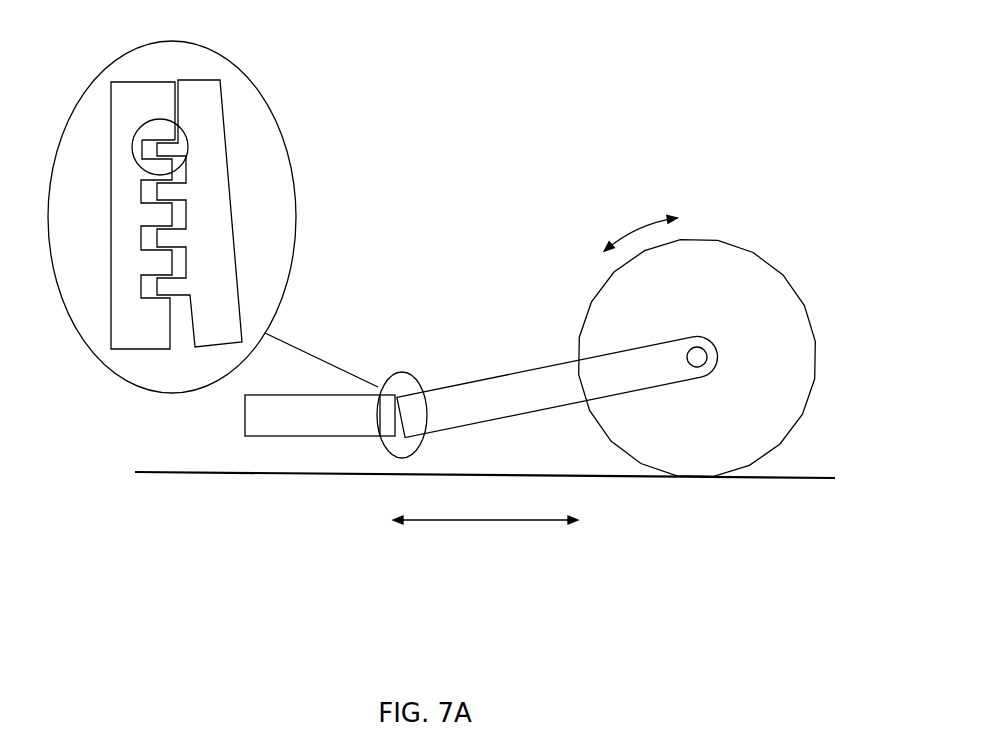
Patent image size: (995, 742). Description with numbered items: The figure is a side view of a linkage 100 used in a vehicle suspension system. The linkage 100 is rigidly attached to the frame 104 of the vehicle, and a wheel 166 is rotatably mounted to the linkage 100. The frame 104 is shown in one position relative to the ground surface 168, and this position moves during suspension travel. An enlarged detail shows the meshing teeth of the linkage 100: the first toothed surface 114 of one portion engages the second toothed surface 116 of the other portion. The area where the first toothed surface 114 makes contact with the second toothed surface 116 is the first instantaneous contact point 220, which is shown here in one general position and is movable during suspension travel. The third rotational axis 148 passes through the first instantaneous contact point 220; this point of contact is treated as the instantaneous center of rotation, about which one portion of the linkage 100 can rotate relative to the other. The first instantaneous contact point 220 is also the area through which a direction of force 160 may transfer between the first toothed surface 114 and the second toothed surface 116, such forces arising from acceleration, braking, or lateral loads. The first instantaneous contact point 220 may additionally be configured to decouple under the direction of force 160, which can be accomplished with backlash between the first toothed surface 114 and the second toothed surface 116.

The linkage 100 is at (395, 400).
The frame 104 is at (280, 410).
The first toothed surface 114 is at (150, 297).
The second toothed surface 116 is at (178, 249).
The third rotational axis 148 is at (153, 147).
The first instantaneous contact point 220 is at (186, 141).
The wheel 166 is at (743, 290).
The ground surface 168 is at (342, 475).
The direction of force 160 is at (433, 520).